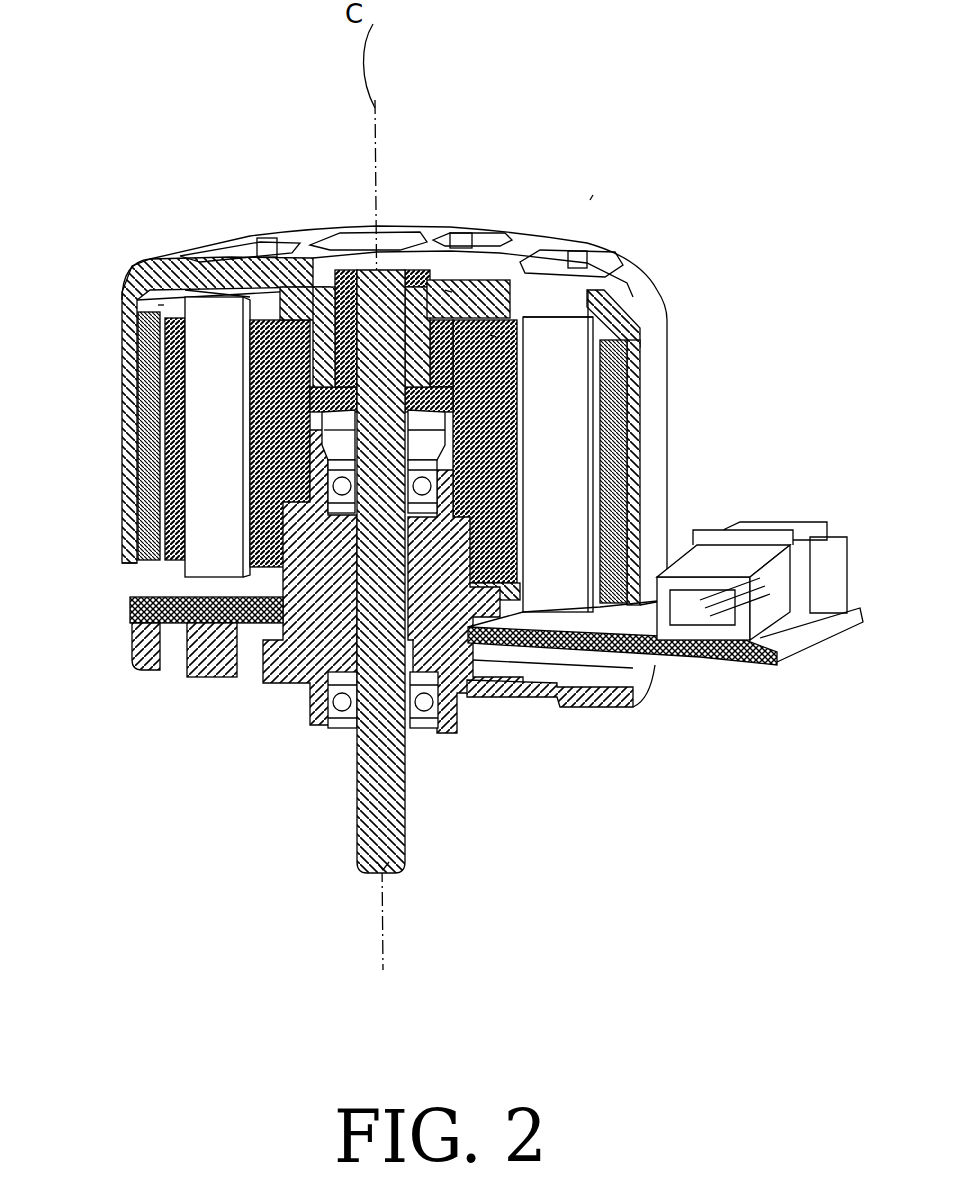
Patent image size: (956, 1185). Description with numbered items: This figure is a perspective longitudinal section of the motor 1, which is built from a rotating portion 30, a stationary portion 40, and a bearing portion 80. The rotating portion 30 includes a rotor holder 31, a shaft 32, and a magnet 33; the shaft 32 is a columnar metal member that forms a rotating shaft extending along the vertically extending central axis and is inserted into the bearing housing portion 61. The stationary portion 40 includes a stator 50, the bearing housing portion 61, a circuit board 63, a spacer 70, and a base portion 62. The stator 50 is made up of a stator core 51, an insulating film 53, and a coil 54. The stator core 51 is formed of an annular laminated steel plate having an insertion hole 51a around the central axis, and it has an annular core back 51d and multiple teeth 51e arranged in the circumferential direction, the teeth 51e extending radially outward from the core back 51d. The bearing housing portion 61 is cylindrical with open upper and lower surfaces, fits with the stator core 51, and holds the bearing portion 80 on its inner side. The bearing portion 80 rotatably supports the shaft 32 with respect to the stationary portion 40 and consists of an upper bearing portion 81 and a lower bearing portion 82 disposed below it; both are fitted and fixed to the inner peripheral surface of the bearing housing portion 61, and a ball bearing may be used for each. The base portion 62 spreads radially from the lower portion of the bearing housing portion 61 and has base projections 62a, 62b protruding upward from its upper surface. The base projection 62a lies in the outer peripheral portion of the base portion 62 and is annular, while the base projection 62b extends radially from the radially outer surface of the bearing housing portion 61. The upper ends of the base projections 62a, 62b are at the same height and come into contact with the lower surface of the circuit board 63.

The motor 1 is at (593, 195).
The rotating portion 30 is at (137, 263).
The rotor holder 31 is at (250, 295).
The shaft 32 is at (372, 862).
The magnet 33 is at (128, 445).
The stationary portion 40 is at (523, 350).
The stator 50 is at (523, 462).
The stator core 51 is at (523, 392).
The insertion hole 51a is at (448, 290).
The core back 51d is at (492, 335).
The teeth 51e is at (160, 305).
The insulating film 53 is at (263, 232).
The coil 54 is at (550, 514).
The bearing housing portion 61 is at (460, 690).
The base portion 62 is at (603, 710).
The base projection 62a is at (130, 630).
The base projection 62b is at (135, 665).
The circuit board 63 is at (652, 692).
The spacer 70 is at (523, 690).
The bearing portion 80 is at (175, 845).
The upper bearing portion 81 is at (320, 515).
The lower bearing portion 82 is at (325, 722).